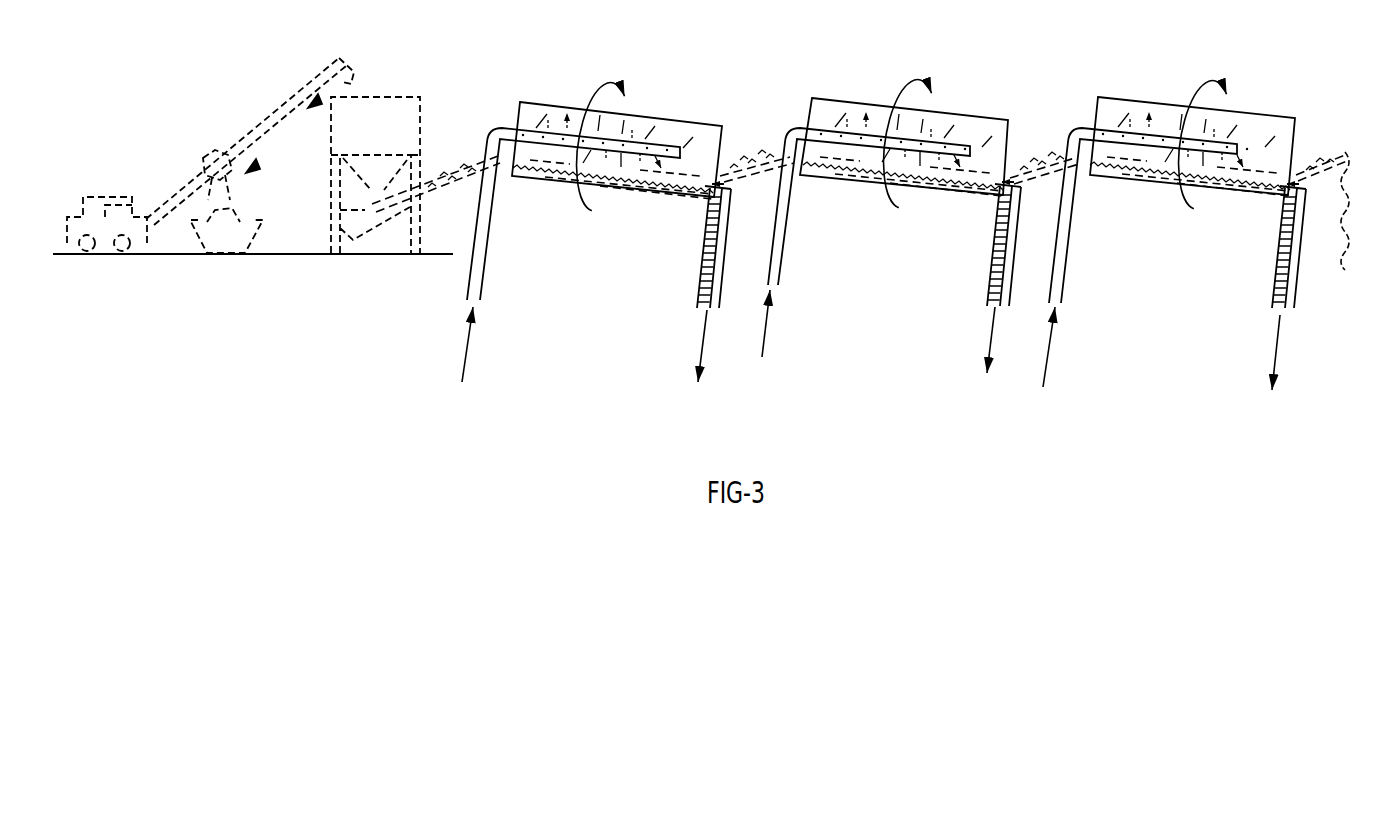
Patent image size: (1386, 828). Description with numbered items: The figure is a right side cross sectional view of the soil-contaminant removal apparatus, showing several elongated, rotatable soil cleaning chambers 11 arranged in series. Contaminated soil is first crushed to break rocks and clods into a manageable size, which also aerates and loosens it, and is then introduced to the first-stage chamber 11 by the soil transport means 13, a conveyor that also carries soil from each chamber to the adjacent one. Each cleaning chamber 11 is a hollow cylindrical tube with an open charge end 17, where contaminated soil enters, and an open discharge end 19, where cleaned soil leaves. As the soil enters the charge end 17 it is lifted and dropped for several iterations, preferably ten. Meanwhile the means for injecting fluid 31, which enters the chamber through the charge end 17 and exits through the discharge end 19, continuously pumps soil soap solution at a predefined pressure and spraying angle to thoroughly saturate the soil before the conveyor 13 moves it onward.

The soil cleaning chamber 11 is at (647, 193).
The soil transport means 13 is at (450, 170).
The charge end 17 is at (523, 168).
The discharge end 19 is at (722, 140).
The means for injecting fluid 31 is at (467, 363).